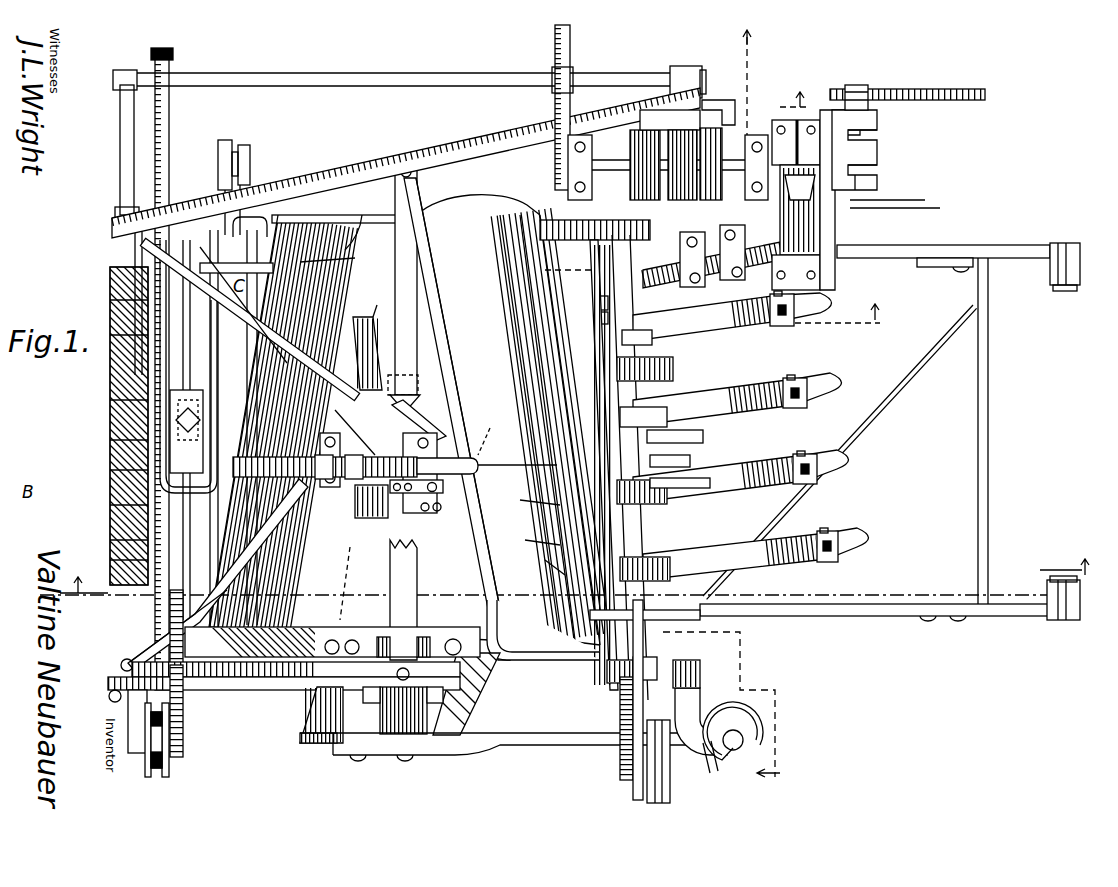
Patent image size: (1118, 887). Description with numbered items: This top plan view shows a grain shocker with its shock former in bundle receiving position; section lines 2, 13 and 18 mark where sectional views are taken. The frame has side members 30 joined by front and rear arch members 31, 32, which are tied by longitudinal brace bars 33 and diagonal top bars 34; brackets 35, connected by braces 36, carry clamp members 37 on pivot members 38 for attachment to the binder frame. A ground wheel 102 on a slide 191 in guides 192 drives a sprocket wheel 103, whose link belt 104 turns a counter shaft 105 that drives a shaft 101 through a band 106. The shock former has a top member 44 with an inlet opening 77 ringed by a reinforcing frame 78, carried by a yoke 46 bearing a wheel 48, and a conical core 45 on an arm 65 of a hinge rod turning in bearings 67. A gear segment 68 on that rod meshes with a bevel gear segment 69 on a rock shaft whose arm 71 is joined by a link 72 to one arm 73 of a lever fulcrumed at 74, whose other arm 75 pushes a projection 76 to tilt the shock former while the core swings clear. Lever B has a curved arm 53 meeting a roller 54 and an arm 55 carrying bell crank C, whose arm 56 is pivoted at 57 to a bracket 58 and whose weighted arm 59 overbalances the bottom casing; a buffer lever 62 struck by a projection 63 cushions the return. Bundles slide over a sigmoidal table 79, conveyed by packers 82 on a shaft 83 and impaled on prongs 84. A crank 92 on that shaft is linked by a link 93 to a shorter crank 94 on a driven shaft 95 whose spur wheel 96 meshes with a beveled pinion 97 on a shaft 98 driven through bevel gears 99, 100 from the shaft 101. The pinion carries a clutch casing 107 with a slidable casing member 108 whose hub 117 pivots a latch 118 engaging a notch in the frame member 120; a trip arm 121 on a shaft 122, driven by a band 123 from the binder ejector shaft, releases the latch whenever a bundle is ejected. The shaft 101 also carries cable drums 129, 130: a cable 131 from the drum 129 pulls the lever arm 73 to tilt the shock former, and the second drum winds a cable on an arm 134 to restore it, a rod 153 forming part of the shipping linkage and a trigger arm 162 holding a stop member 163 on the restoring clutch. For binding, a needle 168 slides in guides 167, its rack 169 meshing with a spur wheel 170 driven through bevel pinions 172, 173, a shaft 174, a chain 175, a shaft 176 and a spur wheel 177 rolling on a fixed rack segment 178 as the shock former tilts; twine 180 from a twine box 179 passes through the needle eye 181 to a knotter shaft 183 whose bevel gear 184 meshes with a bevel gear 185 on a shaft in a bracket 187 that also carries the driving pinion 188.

The section line 2 is at (568, 581).
The section line 13 is at (718, 208).
The section line 18 is at (722, 417).
The side members 30 is at (648, 625).
The front arch member 31 is at (245, 690).
The rear arch member 32 is at (322, 185).
The longitudinal brace bars 33 is at (133, 258).
The diagonal top bars 34 is at (340, 380).
The arms or brackets 35 is at (955, 243).
The braces 36 is at (905, 385).
The terminal clamp members 37 is at (1055, 288).
The pivot members 38 is at (1065, 292).
The top member 44 is at (480, 608).
The end member or core 45 is at (305, 722).
The yoke 46 is at (300, 660).
The wheel 48 is at (400, 740).
The lever arm 53 is at (115, 510).
The roller 54 is at (160, 778).
The lever arm 55 is at (110, 440).
The bell crank arm 56 is at (228, 249).
The pivot 57 is at (216, 150).
The arm or bracket 58 is at (250, 172).
The bell crank arm 59 is at (359, 345).
The buffer lever 62 is at (360, 223).
The projection 63 is at (334, 260).
The arm 65 is at (540, 745).
The bearings 67 is at (672, 775).
The gear segment 68 is at (755, 715).
The bevel gear segment 69 is at (703, 712).
The radial arm 71 is at (700, 761).
The link 72 is at (637, 785).
The lever arm 73 is at (620, 765).
The fulcrum 74 is at (640, 685).
The lever arm 75 is at (655, 628).
The projection 76 is at (607, 680).
The inlet opening 77 is at (490, 315).
The reinforcing frame 78 is at (445, 352).
The table 79 is at (442, 330).
The packers 82 is at (782, 335).
The packer shaft 83 is at (690, 437).
The prong 84 is at (680, 128).
The crank 92 is at (662, 390).
The link 93 is at (680, 350).
The crank 94 is at (770, 335).
The driven shaft 95 is at (690, 395).
The spur wheel 96 is at (768, 272).
The pinion 97 is at (822, 238).
The shaft 98 is at (790, 118).
The bevel gear 99 is at (757, 133).
The bevel gear 100 is at (797, 118).
The shaft 101 is at (582, 133).
The ground wheel 102 is at (130, 362).
The band wheel or sprocket wheel 103 is at (110, 484).
The band or link belt 104 is at (171, 113).
The counter shaft 105 is at (372, 72).
The belt or band 106 is at (550, 110).
The clutch casing 107 is at (890, 212).
The slidable casing member 108 is at (878, 142).
The hub 117 is at (878, 132).
The latch member 118 is at (878, 166).
The frame member 120 is at (836, 265).
The crank or trip arm 121 is at (878, 183).
The shaft 122 is at (880, 88).
The belt or band 123 is at (970, 100).
The winding drum 129 is at (725, 98).
The winding drum 130 is at (645, 128).
The cable 131 is at (660, 540).
The arm 134 is at (545, 218).
The rod 153 is at (540, 395).
The trigger arm 162 is at (600, 310).
The stop member 163 is at (587, 329).
The guides 167 is at (395, 408).
The binding needle 168 is at (480, 470).
The rack 169 is at (548, 565).
The spur wheel 170 is at (325, 458).
The bevel pinion 172 is at (378, 510).
The bevel pinion 173 is at (372, 520).
The shaft 174 is at (290, 565).
The endless belt or chain 175 is at (118, 547).
The shaft 176 is at (240, 690).
The spur wheel 177 is at (170, 605).
The rack segment 178 is at (230, 688).
The twine box 179 is at (358, 299).
The twine 180 is at (420, 380).
The needle eye 181 is at (483, 436).
The knotter shaft 183 is at (679, 457).
The bevel gear 184 is at (510, 468).
The bevel gear 185 is at (540, 543).
The bracket 187 is at (540, 518).
The spur wheel or pinion 188 is at (672, 488).
The slide 191 is at (170, 420).
The guides 192 is at (110, 289).